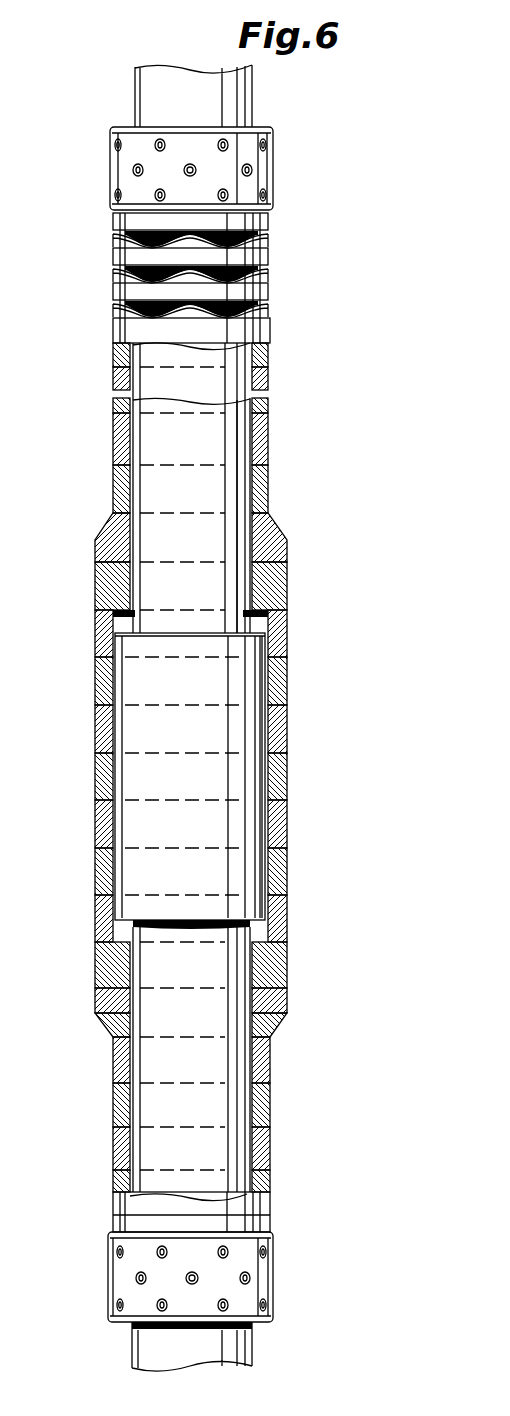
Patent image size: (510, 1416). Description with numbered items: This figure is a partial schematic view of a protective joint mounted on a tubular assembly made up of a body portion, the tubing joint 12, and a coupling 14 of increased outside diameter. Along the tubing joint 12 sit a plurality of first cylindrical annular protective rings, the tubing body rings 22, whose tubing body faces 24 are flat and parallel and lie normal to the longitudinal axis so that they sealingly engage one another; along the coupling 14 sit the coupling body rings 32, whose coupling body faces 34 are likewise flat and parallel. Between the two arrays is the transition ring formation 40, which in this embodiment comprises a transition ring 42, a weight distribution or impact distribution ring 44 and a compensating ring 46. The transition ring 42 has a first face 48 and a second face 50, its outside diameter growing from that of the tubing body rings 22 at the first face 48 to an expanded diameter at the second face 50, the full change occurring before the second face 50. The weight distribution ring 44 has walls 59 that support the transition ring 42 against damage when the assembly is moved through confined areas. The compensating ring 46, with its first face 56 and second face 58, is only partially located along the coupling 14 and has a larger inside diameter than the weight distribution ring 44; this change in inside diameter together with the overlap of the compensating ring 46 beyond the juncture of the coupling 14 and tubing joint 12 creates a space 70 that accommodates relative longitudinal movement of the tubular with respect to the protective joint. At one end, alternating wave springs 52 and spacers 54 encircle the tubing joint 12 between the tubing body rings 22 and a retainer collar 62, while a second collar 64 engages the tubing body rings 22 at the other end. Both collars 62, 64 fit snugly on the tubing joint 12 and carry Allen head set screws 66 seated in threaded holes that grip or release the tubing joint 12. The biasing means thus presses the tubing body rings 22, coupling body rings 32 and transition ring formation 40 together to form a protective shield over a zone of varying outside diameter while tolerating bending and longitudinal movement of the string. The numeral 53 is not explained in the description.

The tubing joint 12 is at (252, 108).
The coupling 14 is at (207, 774).
The tubing body rings 22 is at (270, 357).
The tubing body faces 24 is at (233, 510).
The coupling body rings 32 is at (285, 790).
The coupling body faces 34 is at (212, 664).
The transition ring formation 40 is at (347, 970).
The transition ring 42 is at (100, 528).
The weight distribution ring 44 is at (206, 717).
The compensating ring 46 is at (285, 640).
The first face 48 is at (253, 527).
The second face 50 is at (110, 550).
The wave springs 52 is at (270, 240).
The packing ring 53 is at (105, 572).
The spacers 54 is at (270, 262).
The first face 56 is at (98, 618).
The second face 58 is at (243, 657).
The walls 59 is at (287, 590).
The collar 62 is at (270, 188).
The collar 64 is at (270, 1290).
The Allen head set screws 66 is at (265, 150).
The space 70 is at (257, 622).